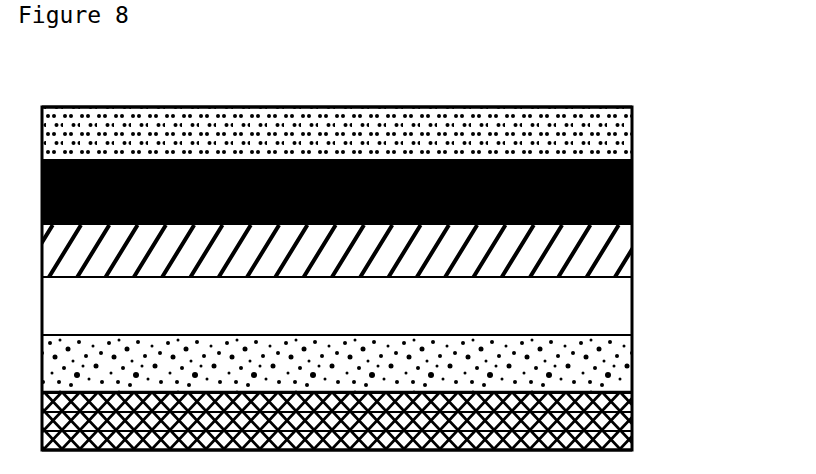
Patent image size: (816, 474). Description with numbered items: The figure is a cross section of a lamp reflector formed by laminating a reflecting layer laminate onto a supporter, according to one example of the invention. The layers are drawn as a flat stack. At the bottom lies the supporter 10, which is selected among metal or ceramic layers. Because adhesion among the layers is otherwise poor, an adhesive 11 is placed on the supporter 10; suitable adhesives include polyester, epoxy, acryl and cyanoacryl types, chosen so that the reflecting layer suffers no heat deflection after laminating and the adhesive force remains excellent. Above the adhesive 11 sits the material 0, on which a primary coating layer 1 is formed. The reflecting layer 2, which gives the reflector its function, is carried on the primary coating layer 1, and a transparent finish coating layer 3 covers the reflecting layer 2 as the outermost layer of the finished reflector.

The transparent finish coating layer 3 is at (632, 138).
The reflecting layer 2 is at (632, 194).
The primary coating layer 1 is at (632, 252).
The material 0 is at (632, 308).
The adhesive 11 is at (632, 364).
The supporter 10 is at (632, 426).